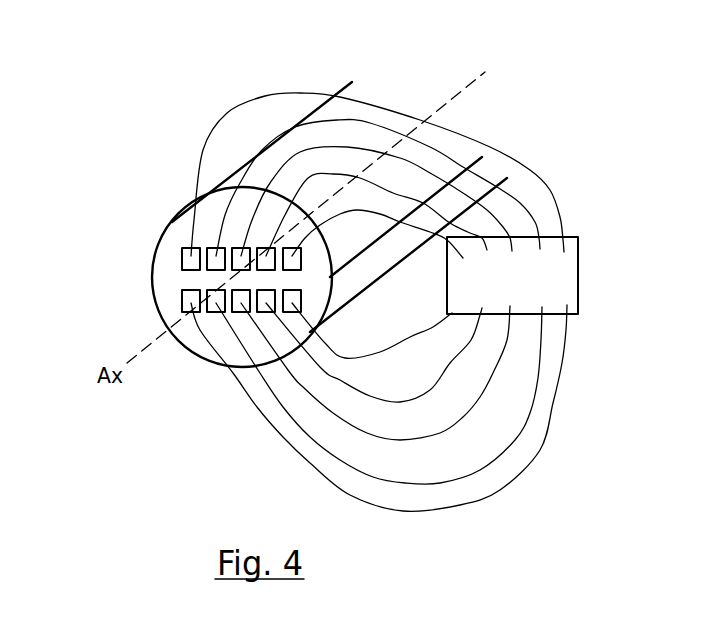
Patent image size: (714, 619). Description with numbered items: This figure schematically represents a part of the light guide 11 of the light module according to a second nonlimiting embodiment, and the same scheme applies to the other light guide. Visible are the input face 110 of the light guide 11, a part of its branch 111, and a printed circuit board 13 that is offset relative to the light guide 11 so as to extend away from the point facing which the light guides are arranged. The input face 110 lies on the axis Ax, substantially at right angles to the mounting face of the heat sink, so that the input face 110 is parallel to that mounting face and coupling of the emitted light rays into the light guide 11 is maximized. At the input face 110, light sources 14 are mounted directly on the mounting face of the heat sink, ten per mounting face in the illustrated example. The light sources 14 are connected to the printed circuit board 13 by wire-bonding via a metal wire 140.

The light guide 11 is at (92, 141).
The input face 110 is at (165, 255).
The branch 111 is at (388, 97).
The light source 14 is at (188, 300).
The metal wire 140 is at (380, 350).
The printed circuit board 13 is at (542, 296).